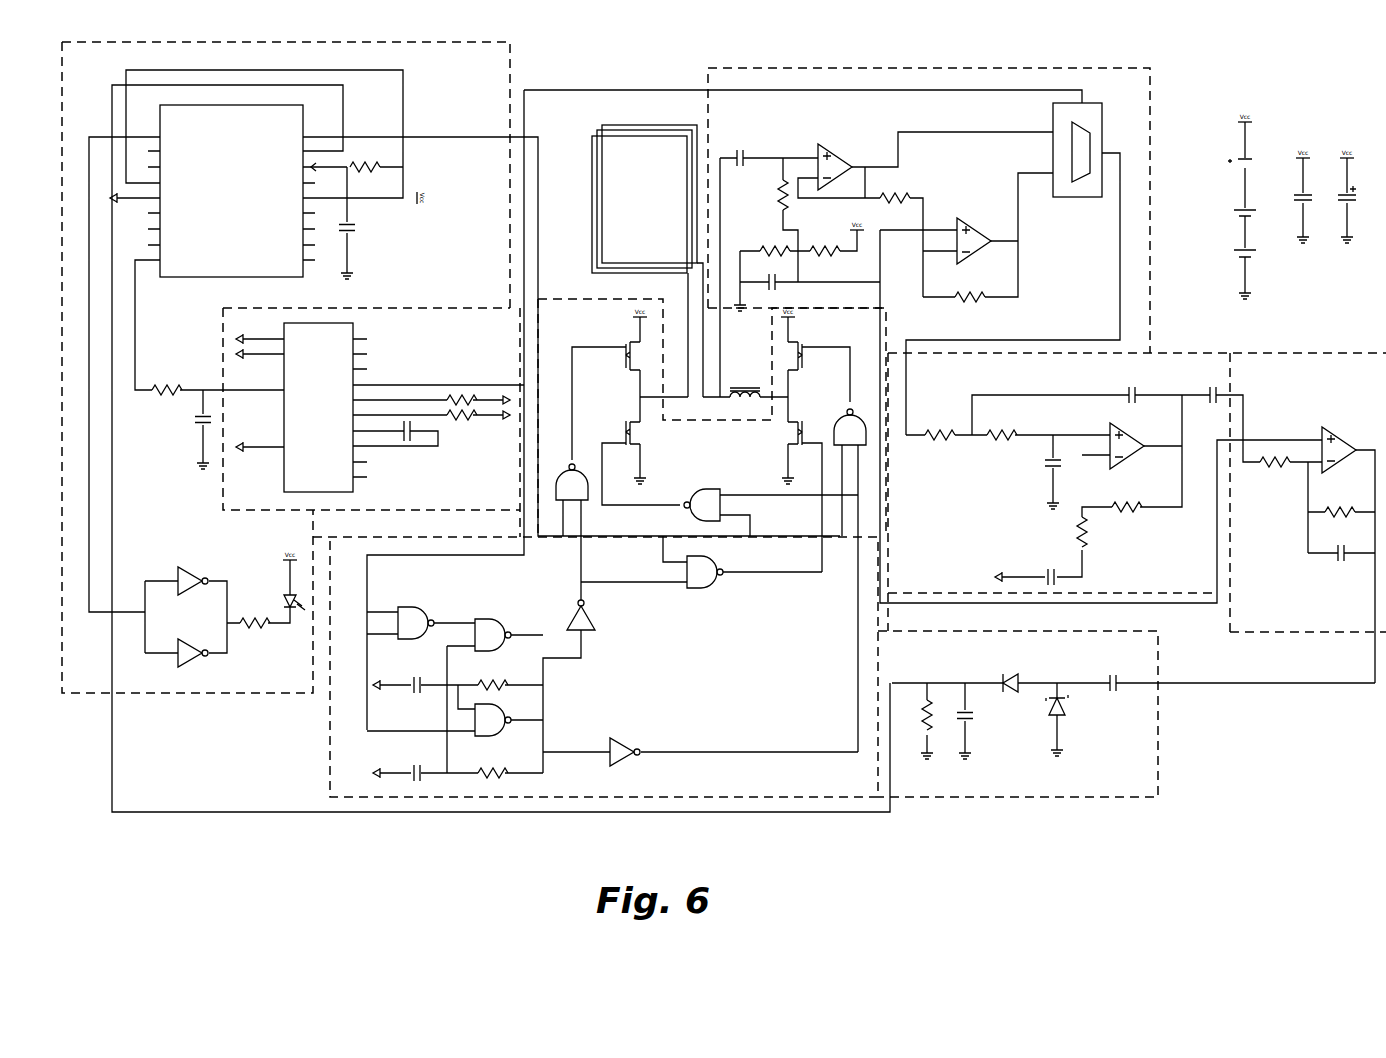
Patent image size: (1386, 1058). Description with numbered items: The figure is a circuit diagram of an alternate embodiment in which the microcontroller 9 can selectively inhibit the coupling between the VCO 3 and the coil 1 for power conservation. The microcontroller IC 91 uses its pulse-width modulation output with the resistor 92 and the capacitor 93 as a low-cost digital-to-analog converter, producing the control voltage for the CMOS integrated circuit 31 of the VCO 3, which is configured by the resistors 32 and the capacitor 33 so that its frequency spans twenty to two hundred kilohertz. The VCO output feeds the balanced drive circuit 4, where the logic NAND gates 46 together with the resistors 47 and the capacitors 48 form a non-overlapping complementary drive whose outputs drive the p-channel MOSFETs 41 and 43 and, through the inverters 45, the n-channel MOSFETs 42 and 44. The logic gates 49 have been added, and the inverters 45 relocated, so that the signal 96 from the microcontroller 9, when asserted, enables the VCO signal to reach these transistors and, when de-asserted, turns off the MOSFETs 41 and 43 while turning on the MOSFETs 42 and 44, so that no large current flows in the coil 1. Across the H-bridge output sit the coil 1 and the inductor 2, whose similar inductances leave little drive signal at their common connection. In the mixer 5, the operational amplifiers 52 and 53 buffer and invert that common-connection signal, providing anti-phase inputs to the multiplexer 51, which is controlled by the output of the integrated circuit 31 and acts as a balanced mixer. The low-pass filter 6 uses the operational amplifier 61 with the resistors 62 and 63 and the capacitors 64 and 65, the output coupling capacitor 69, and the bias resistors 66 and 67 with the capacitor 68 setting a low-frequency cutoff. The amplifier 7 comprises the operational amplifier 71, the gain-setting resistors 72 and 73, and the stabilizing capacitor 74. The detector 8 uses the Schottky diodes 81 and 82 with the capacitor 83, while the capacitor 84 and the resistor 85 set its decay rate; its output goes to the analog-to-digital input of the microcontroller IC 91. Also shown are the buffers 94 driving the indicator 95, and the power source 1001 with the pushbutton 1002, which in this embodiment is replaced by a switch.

The coil 1 is at (629, 261).
The inductor 2 is at (714, 277).
The VCO 3 is at (371, 409).
The balanced drive circuit 4 is at (595, 667).
The mixer 5 is at (929, 210).
The low-pass filter 6 is at (1137, 492).
The amplifier 7 is at (1308, 609).
The detector 8 is at (1018, 714).
The microcontroller 9 is at (291, 367).
The CMOS integrated circuit 31 is at (380, 410).
The resistors 32 is at (457, 392).
The capacitor 33 is at (410, 437).
The p-channel enhancement MOSFET 41 is at (609, 384).
The n-channel enhancement MOSFET 42 is at (632, 451).
The p-channel enhancement MOSFET 43 is at (815, 355).
The n-channel enhancement MOSFET 44 is at (811, 484).
The inverters 45 is at (618, 735).
The logic NAND gates 46 is at (465, 703).
The resistors 47 is at (502, 760).
The capacitors 48 is at (402, 693).
The logic gates 49 is at (592, 508).
The multiplexer 51 is at (1013, 269).
The operational amplifier 52 is at (925, 214).
The operational amplifier 53 is at (980, 235).
The operational amplifier 61 is at (1140, 451).
The resistor 62 is at (941, 422).
The resistor 63 is at (1005, 422).
The capacitor 64 is at (1035, 484).
The capacitor 65 is at (1115, 385).
The resistor 66 is at (1136, 520).
The resistor 67 is at (1099, 539).
The capacitor 68 is at (1024, 564).
The capacitor 69 is at (1206, 382).
The operational amplifier 71 is at (1347, 441).
The resistor 72 is at (1273, 479).
The resistor 73 is at (1343, 500).
The stabilizing capacitor 74 is at (1341, 570).
The Schottky diode 81 is at (1073, 725).
The Schottky diode 82 is at (1013, 669).
The capacitor 83 is at (1116, 668).
The capacitor 84 is at (983, 736).
The resistor 85 is at (918, 713).
The microcontroller IC 91 is at (231, 206).
The resistor 92 is at (169, 377).
The capacitor 93 is at (184, 443).
The buffer inverters 94 is at (192, 617).
The light emitting diode 95 is at (272, 589).
The signal 96 is at (447, 143).
The battery 1001 is at (1212, 254).
The pushbutton 1002 is at (1209, 160).